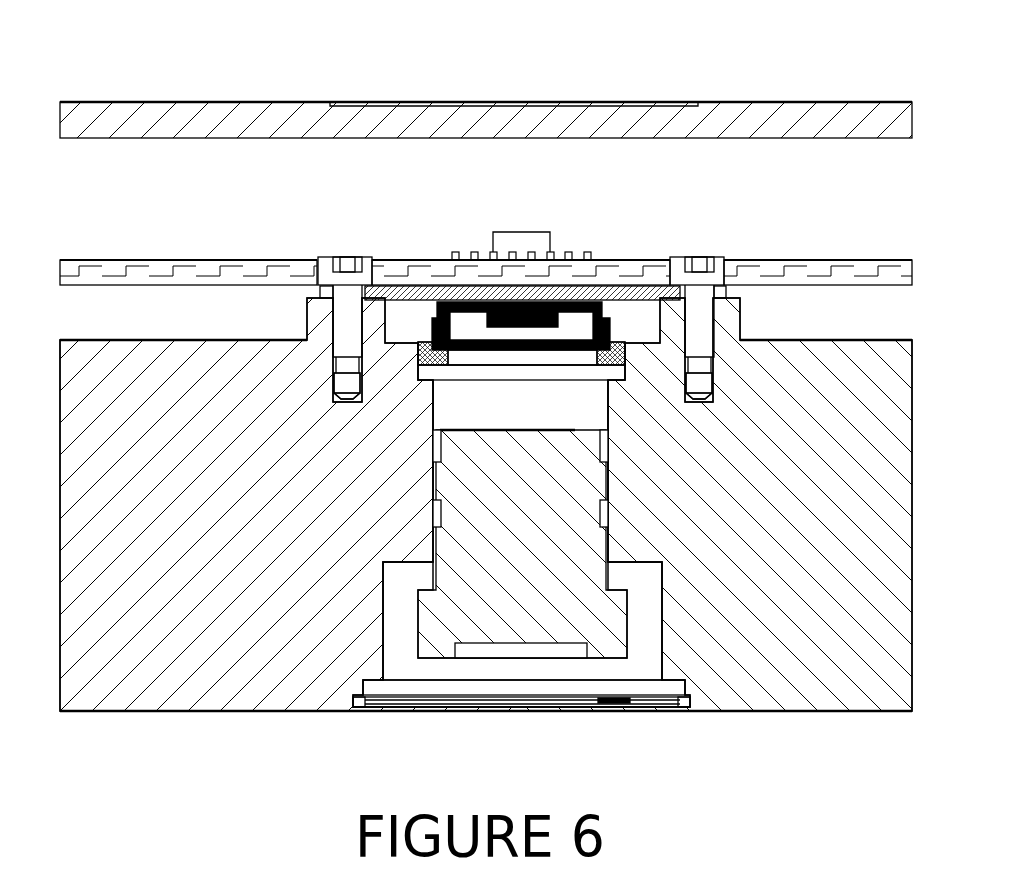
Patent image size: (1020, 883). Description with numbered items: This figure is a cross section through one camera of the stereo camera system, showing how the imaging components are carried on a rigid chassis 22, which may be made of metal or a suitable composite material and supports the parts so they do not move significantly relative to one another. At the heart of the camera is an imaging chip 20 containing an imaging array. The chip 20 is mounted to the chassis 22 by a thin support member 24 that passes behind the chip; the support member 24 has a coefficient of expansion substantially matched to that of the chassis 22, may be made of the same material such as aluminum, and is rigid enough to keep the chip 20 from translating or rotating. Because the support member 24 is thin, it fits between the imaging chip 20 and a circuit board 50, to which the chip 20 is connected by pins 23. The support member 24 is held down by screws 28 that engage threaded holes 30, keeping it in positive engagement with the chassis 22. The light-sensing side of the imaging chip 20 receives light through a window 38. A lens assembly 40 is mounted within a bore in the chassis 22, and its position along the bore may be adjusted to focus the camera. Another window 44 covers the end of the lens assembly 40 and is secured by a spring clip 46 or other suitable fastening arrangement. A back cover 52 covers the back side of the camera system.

The imaging chip 20 is at (612, 325).
The chassis 22 is at (128, 643).
The pins 23 is at (510, 250).
The support member 24 is at (425, 292).
The screws 28 is at (337, 260).
The threaded holes 30 is at (343, 385).
The window 38 is at (518, 372).
The lens assembly 40 is at (448, 615).
The window 44 is at (447, 686).
The spring clip 46 is at (668, 705).
The circuit board 50 is at (823, 260).
The back cover 52 is at (528, 122).